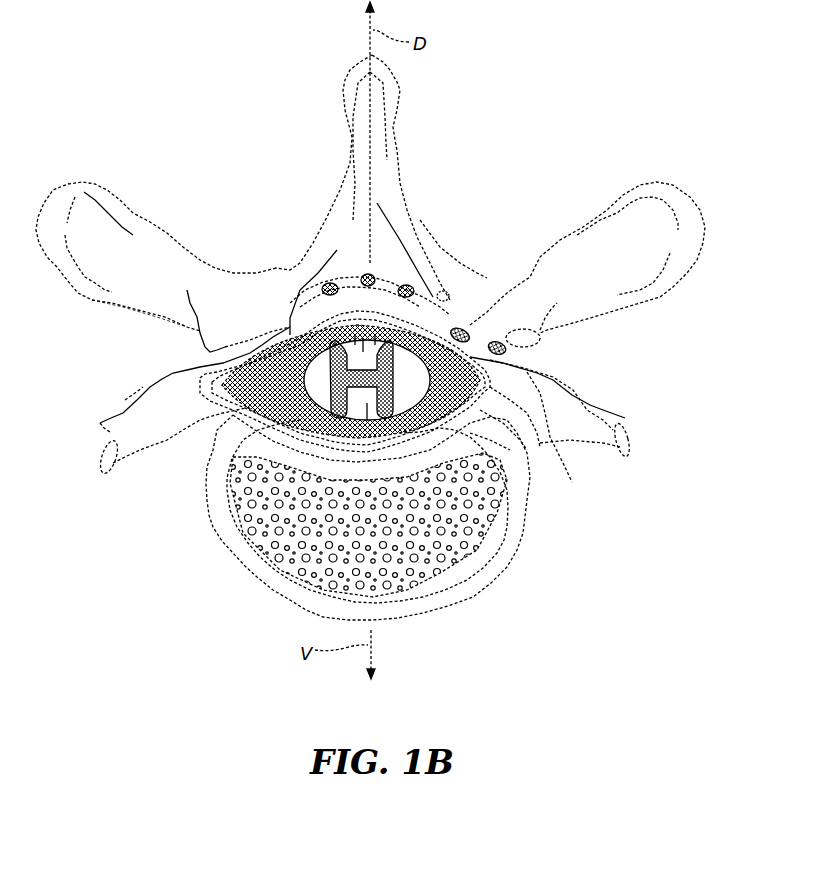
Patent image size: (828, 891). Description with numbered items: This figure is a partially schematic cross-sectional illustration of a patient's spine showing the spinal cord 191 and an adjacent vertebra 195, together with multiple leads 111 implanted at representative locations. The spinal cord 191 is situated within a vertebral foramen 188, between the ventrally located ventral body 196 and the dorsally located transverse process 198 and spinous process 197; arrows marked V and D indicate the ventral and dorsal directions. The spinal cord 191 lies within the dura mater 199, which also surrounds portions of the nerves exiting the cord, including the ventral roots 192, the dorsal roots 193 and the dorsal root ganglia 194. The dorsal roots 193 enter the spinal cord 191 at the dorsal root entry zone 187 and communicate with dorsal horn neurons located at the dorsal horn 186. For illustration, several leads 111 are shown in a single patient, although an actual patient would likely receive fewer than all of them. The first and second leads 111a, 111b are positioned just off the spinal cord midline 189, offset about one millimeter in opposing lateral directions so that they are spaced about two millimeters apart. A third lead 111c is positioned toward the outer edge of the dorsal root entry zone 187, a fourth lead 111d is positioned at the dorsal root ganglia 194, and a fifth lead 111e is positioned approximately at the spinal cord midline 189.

The leads 111 is at (551, 135).
The first lead 111a is at (326, 290).
The second lead 111b is at (437, 297).
The third lead 111c is at (458, 337).
The fourth lead 111d is at (475, 330).
The fifth lead 111e is at (407, 290).
The dorsal horn 186 is at (485, 385).
The dorsal root entry zone 187 is at (420, 300).
The vertebral foramen 188 is at (281, 433).
The spinal cord midline 189 is at (372, 138).
The spinal cord 191 is at (320, 370).
The ventral roots 192 is at (480, 533).
The dorsal roots 193 is at (555, 375).
The dorsal root ganglia 194 is at (563, 470).
The vertebra 195 is at (173, 338).
The ventral body 196 is at (408, 396).
The spinous process 197 is at (388, 97).
The transverse process 198 is at (82, 185).
The dura mater 199 is at (177, 417).